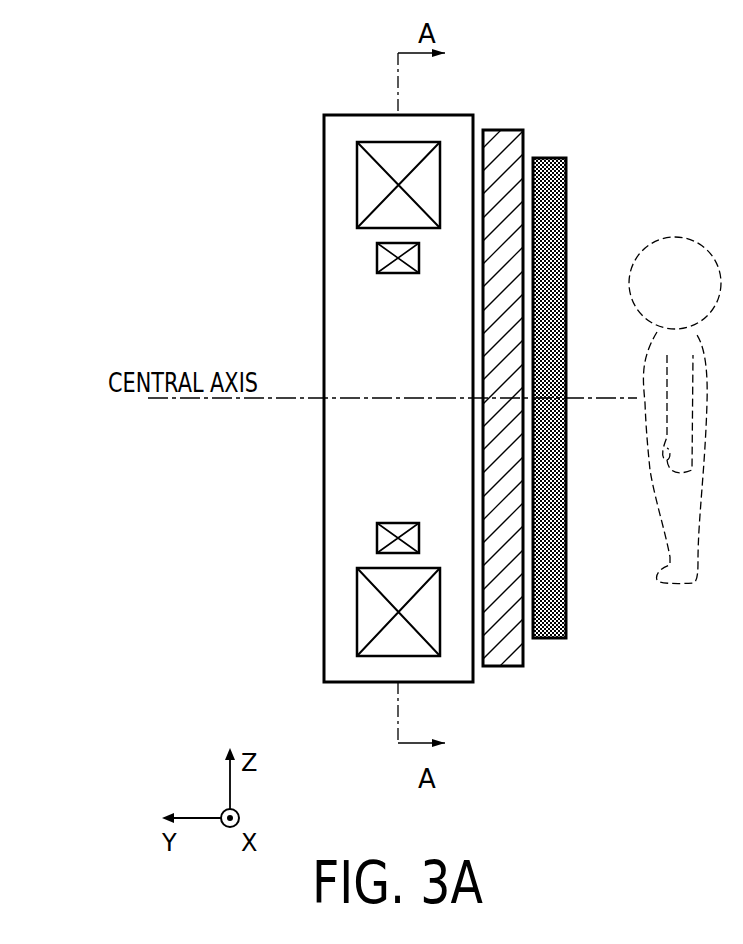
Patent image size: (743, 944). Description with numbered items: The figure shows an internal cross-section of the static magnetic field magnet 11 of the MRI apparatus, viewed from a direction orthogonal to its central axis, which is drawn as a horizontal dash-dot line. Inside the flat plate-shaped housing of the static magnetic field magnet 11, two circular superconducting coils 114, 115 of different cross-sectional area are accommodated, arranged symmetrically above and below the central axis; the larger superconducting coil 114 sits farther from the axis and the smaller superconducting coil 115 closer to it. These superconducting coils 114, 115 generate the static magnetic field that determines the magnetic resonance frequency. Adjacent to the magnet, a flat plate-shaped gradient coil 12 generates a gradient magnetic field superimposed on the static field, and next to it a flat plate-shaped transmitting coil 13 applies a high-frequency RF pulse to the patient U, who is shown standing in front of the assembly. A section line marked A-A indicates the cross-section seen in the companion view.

The static magnetic field magnet 11 is at (324, 322).
The superconducting coil 114 is at (357, 178).
The superconducting coil 115 is at (377, 254).
The gradient coil 12 is at (507, 130).
The transmitting coil 13 is at (550, 158).
The patient U is at (685, 235).